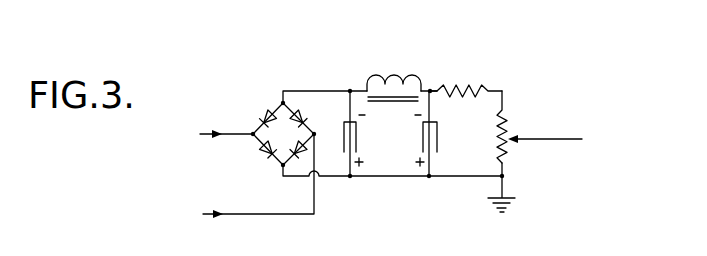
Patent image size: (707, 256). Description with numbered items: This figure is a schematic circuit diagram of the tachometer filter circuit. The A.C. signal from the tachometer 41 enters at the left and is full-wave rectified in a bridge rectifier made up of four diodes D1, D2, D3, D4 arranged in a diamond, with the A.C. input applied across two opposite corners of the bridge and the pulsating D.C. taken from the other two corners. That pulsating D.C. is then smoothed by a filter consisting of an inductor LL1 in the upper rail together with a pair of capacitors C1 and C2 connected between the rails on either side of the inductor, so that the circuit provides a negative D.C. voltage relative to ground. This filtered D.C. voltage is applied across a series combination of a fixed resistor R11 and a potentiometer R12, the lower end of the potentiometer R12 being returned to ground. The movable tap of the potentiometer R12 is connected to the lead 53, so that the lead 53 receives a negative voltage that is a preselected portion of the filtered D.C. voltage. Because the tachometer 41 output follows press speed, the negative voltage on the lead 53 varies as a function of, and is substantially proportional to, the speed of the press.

The tachometer 41 is at (175, 174).
The diode D1 is at (262, 114).
The diode D2 is at (304, 115).
The diode D3 is at (267, 154).
The diode D4 is at (308, 150).
The inductor LL1 is at (396, 74).
The capacitor C1 is at (358, 141).
The capacitor C2 is at (440, 143).
The fixed resistor R11 is at (497, 56).
The potentiometer R12 is at (506, 124).
The lead 53 is at (565, 139).